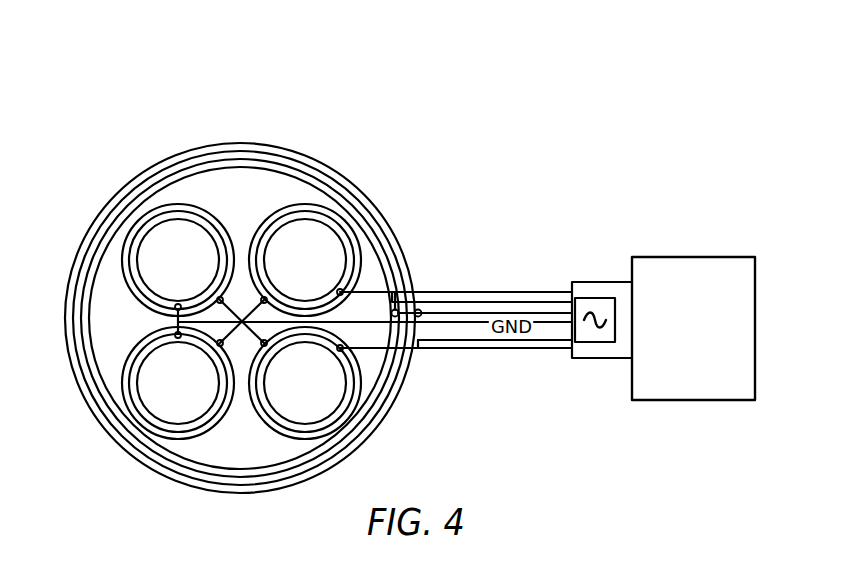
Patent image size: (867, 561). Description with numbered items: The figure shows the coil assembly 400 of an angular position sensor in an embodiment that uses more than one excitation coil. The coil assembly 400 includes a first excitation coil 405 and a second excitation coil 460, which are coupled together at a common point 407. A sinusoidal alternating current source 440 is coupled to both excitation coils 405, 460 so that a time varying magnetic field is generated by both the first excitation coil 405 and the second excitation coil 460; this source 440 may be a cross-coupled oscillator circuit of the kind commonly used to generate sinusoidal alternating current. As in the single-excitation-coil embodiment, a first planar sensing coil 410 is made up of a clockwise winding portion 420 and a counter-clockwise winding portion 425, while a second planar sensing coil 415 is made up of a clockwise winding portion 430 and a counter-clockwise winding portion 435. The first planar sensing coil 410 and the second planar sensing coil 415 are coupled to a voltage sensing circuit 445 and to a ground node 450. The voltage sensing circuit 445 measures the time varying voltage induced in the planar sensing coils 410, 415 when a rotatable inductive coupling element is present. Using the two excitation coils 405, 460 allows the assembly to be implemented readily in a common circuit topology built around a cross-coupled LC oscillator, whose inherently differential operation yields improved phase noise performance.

The coil assembly 400 is at (146, 102).
The first excitation coil 405 is at (478, 300).
The common point 407 is at (532, 311).
The first planar sensing coil 410 is at (430, 290).
The second planar sensing coil 415 is at (435, 350).
The clockwise winding portion 420 is at (357, 222).
The counter-clockwise winding portion 425 is at (132, 421).
The clockwise winding portion 430 is at (133, 223).
The counter-clockwise winding portion 435 is at (363, 430).
The sinusoidal alternating current source 440 is at (595, 297).
The voltage sensing circuit 445 is at (690, 257).
The ground node 450 is at (477, 342).
The second excitation coil 460 is at (548, 350).